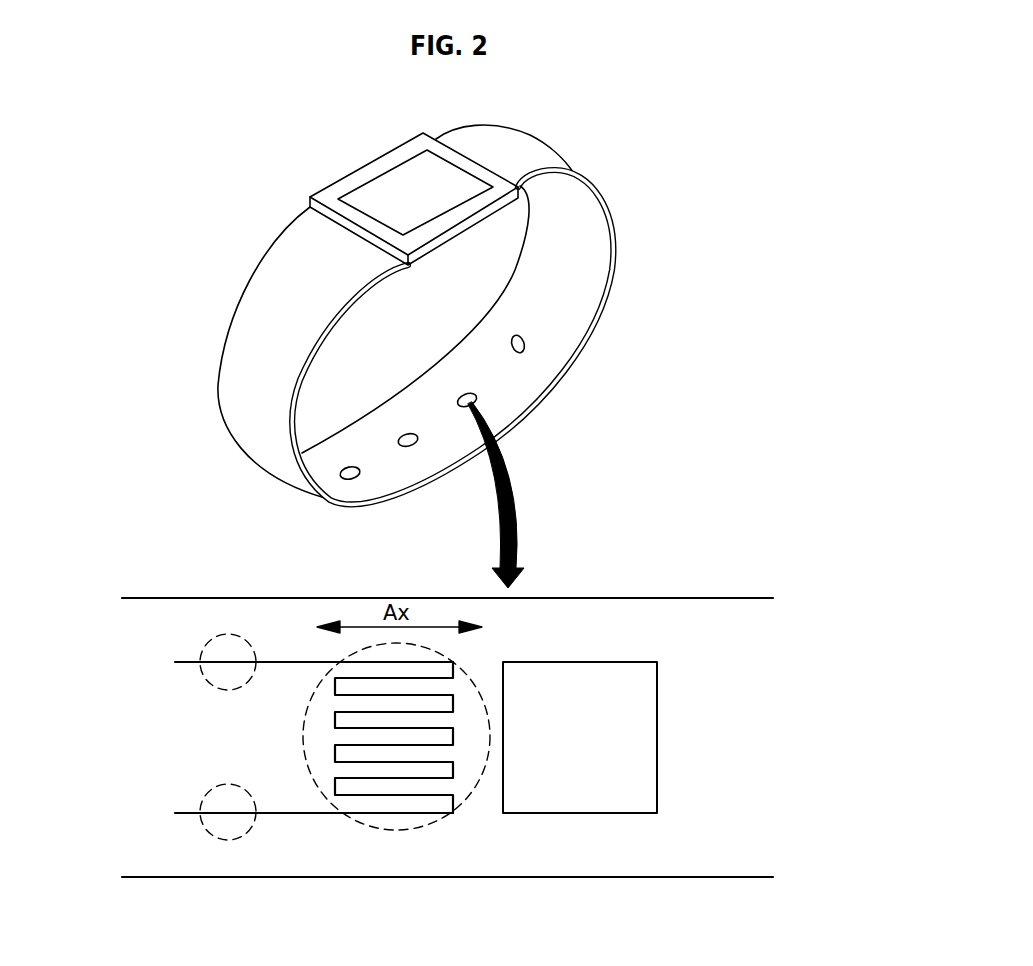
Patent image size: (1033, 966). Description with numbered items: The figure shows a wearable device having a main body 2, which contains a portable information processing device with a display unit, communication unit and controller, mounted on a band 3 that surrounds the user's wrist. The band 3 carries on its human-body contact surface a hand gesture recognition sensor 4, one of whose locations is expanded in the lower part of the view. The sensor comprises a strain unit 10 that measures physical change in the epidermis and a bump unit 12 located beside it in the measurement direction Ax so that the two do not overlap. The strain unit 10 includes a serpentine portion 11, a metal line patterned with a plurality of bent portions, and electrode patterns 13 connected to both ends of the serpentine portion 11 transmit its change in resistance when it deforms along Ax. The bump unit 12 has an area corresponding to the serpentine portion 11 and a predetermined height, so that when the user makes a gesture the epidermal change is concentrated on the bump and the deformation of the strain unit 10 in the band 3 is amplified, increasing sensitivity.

The main body 2 is at (386, 180).
The band 3 is at (565, 290).
The hand gesture recognition sensor 4 is at (527, 342).
The strain unit 10 is at (341, 842).
The serpentine portion 11 is at (407, 832).
The bump unit 12 is at (577, 797).
The electrode patterns 13 is at (228, 634).